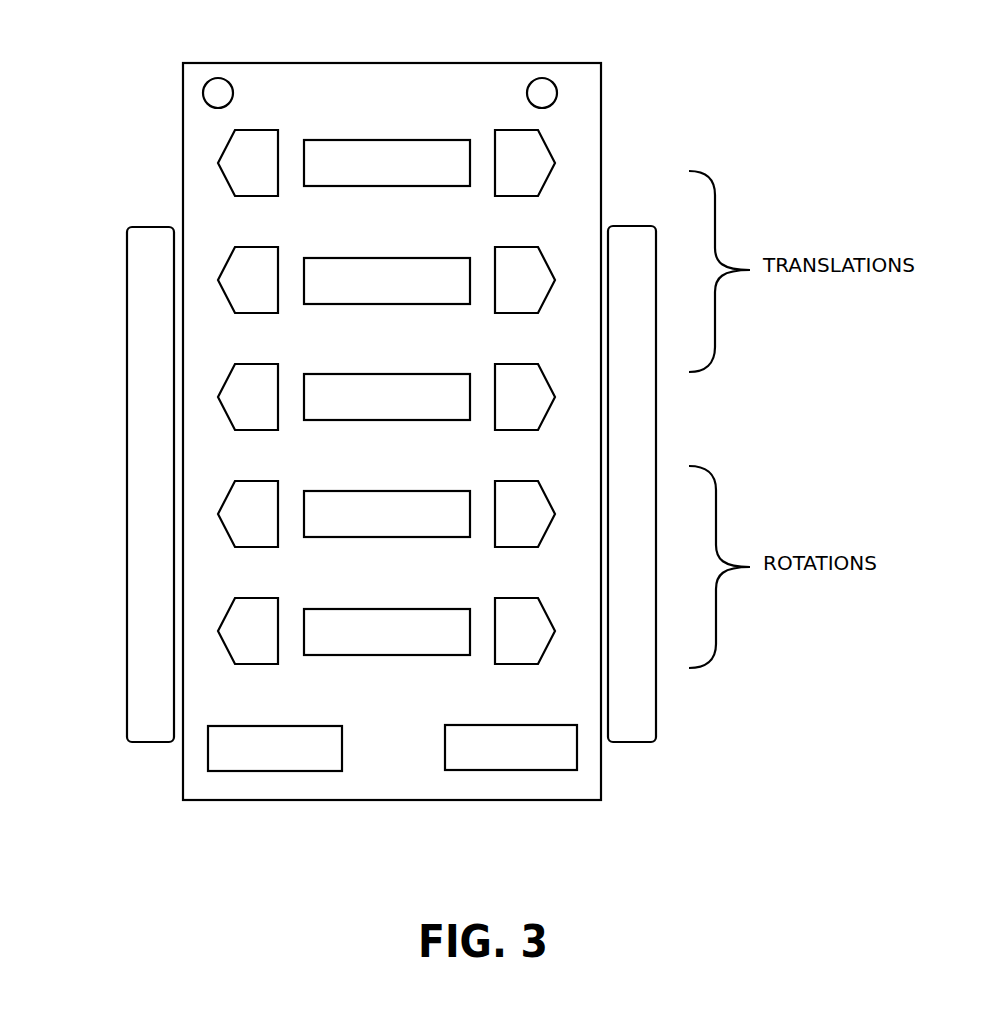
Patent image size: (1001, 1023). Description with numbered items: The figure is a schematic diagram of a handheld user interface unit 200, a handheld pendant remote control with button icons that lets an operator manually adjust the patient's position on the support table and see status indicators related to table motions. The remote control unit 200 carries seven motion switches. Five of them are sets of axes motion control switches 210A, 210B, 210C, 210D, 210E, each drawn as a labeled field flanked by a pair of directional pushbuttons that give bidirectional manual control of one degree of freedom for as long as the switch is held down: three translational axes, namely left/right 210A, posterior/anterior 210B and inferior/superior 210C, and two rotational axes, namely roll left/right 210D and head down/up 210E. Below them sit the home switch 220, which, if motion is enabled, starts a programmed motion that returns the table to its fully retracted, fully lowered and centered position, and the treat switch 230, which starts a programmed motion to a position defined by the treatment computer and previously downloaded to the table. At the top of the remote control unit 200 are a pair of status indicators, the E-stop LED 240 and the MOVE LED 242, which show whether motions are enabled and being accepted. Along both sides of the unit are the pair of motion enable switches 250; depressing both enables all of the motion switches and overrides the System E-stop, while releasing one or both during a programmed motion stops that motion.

The handheld user interface unit 200 is at (336, 825).
The left/right axis motion control switch 210A is at (321, 148).
The posterior/anterior axis motion control switch 210B is at (321, 266).
The inferior/superior axis motion control switch 210C is at (321, 382).
The roll left/right axis motion control switch 210D is at (321, 499).
The head down/up axis motion control switch 210E is at (321, 617).
The home switch 220 is at (320, 733).
The treat switch 230 is at (463, 733).
The E-stop LED 240 is at (218, 91).
The MOVE LED 242 is at (542, 91).
The motion enable switches 250 is at (143, 502).